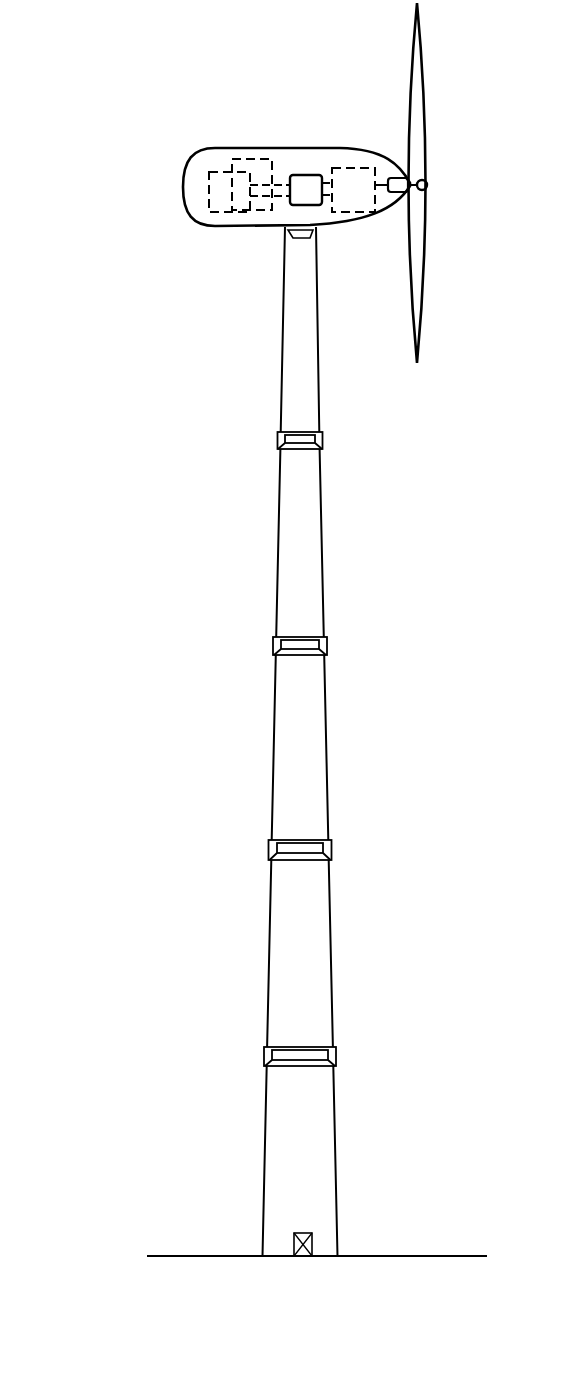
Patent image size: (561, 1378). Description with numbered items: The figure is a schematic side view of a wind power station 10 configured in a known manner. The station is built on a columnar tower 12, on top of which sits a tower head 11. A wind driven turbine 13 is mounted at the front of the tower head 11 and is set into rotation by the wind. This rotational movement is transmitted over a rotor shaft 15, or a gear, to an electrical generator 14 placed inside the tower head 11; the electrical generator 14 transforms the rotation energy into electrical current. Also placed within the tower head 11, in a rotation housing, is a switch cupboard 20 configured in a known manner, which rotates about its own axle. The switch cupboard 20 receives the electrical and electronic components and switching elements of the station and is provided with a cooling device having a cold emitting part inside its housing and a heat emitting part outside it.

The wind power station 10 is at (170, 358).
The tower head 11 is at (242, 147).
The columnar tower 12 is at (288, 752).
The wind driven turbine 13 is at (352, 167).
The electrical generator 14 is at (219, 204).
The rotor shaft 15 is at (276, 183).
The switch cupboard 20 is at (303, 178).